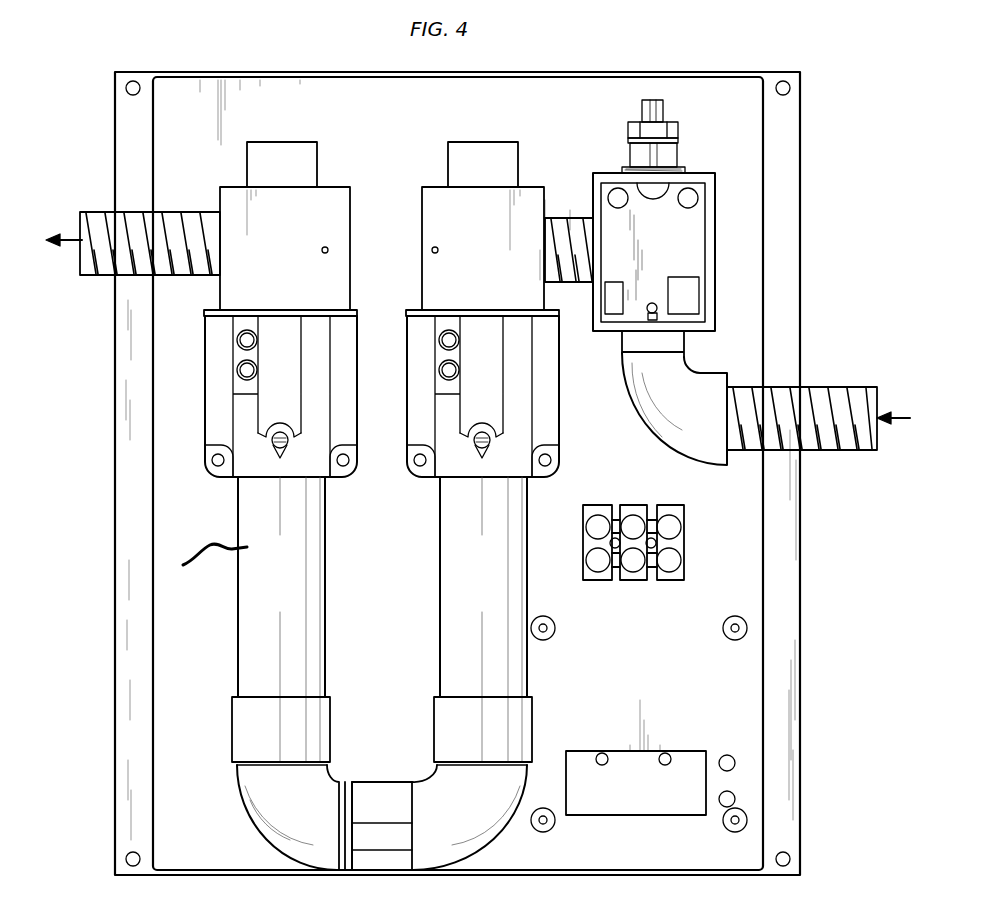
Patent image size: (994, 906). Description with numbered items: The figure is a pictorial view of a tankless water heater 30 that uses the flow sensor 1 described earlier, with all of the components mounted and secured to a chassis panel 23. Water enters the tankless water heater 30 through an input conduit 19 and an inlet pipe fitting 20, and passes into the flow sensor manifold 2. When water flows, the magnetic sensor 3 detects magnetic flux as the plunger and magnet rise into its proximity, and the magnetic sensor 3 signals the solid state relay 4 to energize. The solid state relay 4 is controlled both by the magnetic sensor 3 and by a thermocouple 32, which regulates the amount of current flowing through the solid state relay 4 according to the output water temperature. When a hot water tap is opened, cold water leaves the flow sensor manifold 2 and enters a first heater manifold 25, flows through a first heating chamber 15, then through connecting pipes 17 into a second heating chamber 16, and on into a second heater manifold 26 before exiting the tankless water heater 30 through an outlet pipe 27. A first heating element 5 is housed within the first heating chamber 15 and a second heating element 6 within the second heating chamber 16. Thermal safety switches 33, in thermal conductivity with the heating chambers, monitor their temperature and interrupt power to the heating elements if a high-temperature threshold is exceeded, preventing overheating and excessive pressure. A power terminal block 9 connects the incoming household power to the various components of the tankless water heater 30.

The flow sensor 1 is at (693, 215).
The flow sensor manifold 2 is at (716, 216).
The magnetic sensor 3 is at (675, 157).
The solid state relay 4 is at (666, 252).
The first heating element 5 is at (483, 175).
The second heating element 6 is at (281, 175).
The power terminal block 9 is at (690, 552).
The first heating chamber 15 is at (497, 586).
The second heating chamber 16 is at (295, 586).
The connecting pipes 17 is at (317, 816).
The input conduit 19 is at (880, 395).
The inlet pipe fitting 20 is at (680, 456).
The chassis panel 23 is at (128, 143).
The first heater manifold 25 is at (494, 259).
The second heater manifold 26 is at (290, 259).
The outlet pipe 27 is at (82, 256).
The tankless water heater 30 is at (113, 73).
The thermocouple 32 is at (244, 546).
The thermal safety switches 33 is at (355, 478).